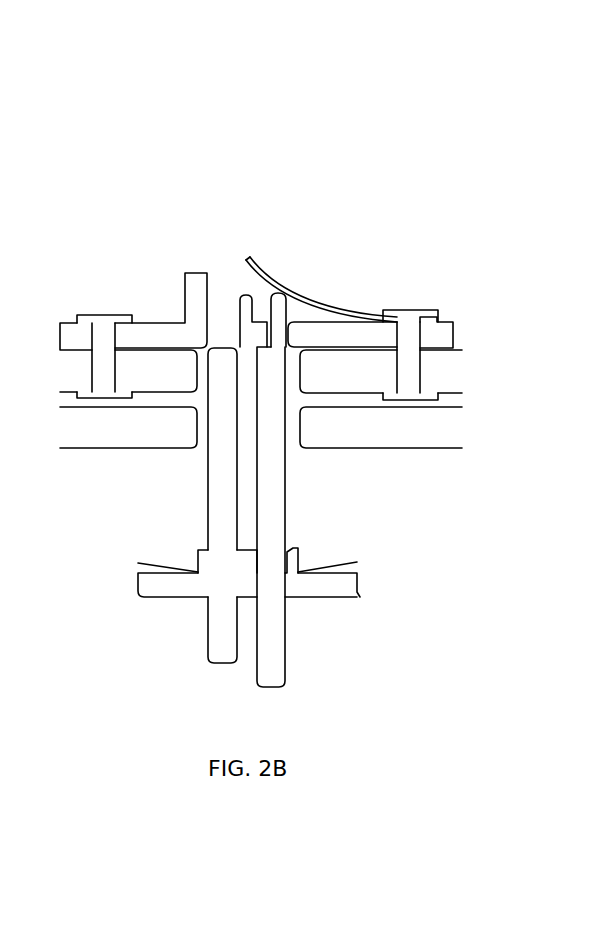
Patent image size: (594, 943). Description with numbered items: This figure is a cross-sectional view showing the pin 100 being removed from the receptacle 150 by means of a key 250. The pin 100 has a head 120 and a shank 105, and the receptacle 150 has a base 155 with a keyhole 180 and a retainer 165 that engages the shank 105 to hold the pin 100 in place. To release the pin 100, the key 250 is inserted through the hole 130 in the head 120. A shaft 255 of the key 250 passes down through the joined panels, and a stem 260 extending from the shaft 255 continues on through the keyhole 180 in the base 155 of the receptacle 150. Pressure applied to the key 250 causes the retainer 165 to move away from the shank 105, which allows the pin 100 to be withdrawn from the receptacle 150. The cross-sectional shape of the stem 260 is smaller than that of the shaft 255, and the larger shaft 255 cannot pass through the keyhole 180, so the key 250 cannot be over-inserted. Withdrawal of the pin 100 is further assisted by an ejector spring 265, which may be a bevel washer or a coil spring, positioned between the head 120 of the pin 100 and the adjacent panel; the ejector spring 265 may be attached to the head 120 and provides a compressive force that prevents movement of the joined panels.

The pin 100 is at (165, 637).
The shank 105 is at (208, 505).
The head 120 is at (360, 597).
The hole 130 is at (290, 547).
The receptacle 150 is at (438, 135).
The base 155 is at (453, 338).
The retainer 165 is at (272, 277).
The keyhole 180 is at (288, 325).
The key 250 is at (303, 691).
The shaft 255 is at (285, 628).
The stem 260 is at (270, 307).
The ejector spring 265 is at (157, 567).